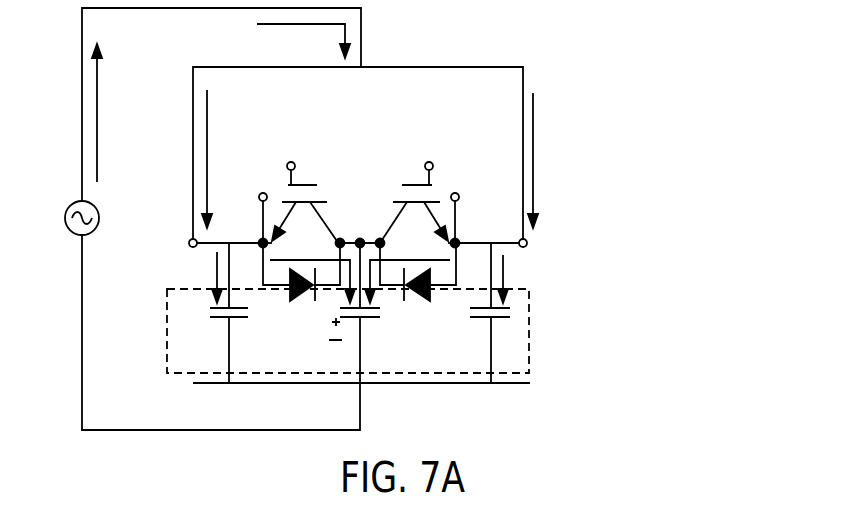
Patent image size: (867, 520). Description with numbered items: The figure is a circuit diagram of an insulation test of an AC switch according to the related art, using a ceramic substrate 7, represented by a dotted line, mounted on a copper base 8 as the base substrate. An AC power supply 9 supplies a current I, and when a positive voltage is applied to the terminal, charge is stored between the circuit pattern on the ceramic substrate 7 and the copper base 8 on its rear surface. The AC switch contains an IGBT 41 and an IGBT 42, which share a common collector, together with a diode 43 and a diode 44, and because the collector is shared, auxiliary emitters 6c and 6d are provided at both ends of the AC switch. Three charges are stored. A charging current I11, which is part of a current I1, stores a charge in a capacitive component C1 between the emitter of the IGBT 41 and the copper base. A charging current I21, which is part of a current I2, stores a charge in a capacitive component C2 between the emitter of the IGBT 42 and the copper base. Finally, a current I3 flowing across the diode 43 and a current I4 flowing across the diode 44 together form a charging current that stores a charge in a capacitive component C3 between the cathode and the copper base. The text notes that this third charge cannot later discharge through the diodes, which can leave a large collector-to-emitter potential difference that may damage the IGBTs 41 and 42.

The AC power supply 9 is at (97, 209).
The current I is at (98, 116).
The current I1 is at (208, 155).
The current I2 is at (535, 160).
The current I3 is at (293, 260).
The current I4 is at (408, 258).
The charging current I11 is at (215, 278).
The charging current I21 is at (505, 278).
The auxiliary emitter 6c is at (259, 196).
The auxiliary emitter 6d is at (459, 197).
The IGBT 41 is at (302, 184).
The IGBT 42 is at (403, 184).
The diode 43 is at (296, 298).
The diode 44 is at (420, 298).
The capacitive component C1 is at (235, 313).
The capacitive component C2 is at (488, 313).
The capacitive component C3 is at (361, 304).
The ceramic substrate 7 is at (529, 323).
The copper base 8 is at (463, 383).